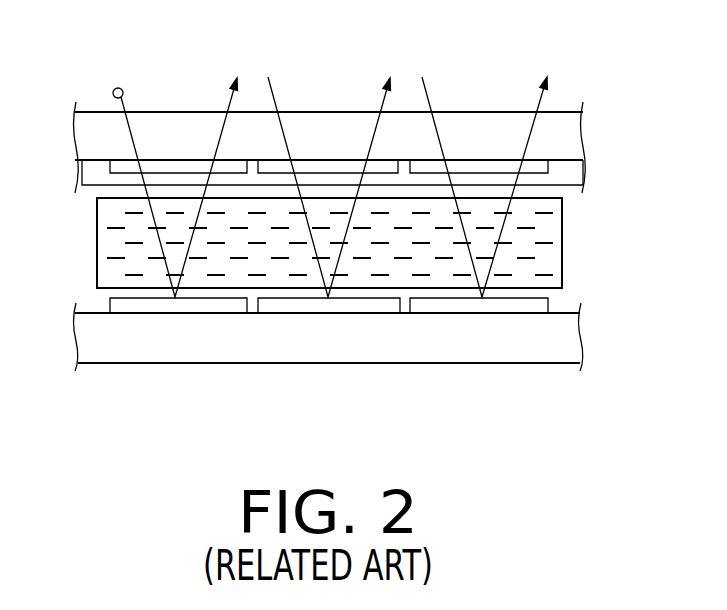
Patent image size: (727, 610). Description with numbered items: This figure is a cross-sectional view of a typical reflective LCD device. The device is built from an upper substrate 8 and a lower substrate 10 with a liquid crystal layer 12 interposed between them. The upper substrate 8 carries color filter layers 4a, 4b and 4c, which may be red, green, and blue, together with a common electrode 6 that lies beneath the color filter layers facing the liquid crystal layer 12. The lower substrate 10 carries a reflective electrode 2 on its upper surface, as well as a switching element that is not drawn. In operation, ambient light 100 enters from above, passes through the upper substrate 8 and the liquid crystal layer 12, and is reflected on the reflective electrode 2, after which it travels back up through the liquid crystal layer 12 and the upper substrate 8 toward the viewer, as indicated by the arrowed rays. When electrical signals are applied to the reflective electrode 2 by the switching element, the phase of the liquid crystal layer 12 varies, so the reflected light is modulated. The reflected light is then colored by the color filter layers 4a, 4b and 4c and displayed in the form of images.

The ambient light 100 is at (114, 91).
The color filter layer 4a is at (177, 167).
The color filter layer 4b is at (333, 167).
The color filter layer 4c is at (490, 167).
The upper substrate 8 is at (611, 110).
The common electrode 6 is at (583, 175).
The liquid crystal layer 12 is at (611, 203).
The lower substrate 10 is at (611, 298).
The reflective electrode 2 is at (143, 303).